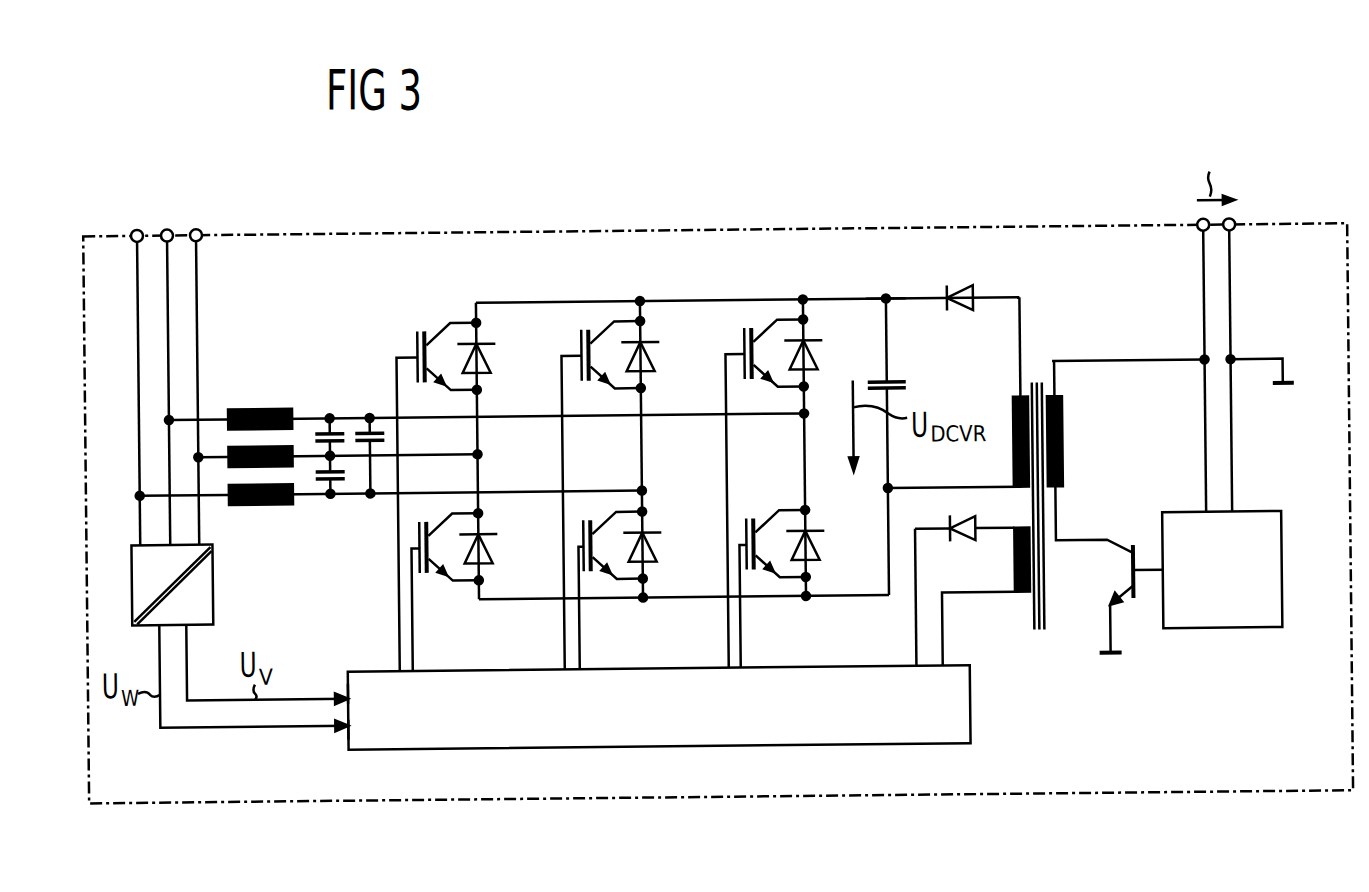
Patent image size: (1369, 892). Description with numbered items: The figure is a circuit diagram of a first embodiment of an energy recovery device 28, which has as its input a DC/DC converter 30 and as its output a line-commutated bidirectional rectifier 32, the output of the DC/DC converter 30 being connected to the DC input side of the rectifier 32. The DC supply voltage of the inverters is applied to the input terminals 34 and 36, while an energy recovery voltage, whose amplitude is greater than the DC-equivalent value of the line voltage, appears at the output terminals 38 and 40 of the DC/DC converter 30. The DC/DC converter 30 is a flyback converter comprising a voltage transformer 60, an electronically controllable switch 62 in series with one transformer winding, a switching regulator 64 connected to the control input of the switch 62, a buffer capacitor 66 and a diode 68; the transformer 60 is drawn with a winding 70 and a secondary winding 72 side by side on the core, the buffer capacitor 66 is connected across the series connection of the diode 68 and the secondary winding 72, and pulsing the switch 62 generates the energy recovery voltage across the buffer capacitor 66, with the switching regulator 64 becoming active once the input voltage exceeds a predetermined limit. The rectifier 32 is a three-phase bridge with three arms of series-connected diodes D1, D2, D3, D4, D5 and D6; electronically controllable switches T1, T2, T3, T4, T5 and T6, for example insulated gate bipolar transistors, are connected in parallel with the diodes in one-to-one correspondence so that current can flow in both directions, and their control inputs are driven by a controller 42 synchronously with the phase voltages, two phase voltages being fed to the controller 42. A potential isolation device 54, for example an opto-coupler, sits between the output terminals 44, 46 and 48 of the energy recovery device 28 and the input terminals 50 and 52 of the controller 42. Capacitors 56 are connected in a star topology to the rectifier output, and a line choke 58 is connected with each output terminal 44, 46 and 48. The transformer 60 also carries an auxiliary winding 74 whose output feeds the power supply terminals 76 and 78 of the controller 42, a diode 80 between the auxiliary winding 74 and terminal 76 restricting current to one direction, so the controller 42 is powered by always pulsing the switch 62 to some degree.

The energy recovery device 28 is at (729, 229).
The DC/DC converter 30 is at (1191, 376).
The line-commutated bidirectional rectifier 32 is at (687, 482).
The input terminal 34 is at (1204, 223).
The input terminal 36 is at (1236, 223).
The output terminal 38 is at (888, 298).
The output terminal 40 is at (893, 490).
The controller 42 is at (968, 702).
The output terminal 44 is at (140, 224).
The output terminal 46 is at (170, 224).
The output terminal 48 is at (199, 224).
The input terminal 50 is at (345, 688).
The input terminal 52 is at (346, 731).
The potential isolation device 54 is at (212, 583).
The capacitors 56 is at (369, 414).
The line choke 58 is at (259, 404).
The voltage transformer 60 is at (1009, 488).
The electronically controllable switch 62 is at (1128, 575).
The switching regulator 64 is at (1281, 575).
The buffer capacitor 66 is at (896, 382).
The diode 68 is at (952, 286).
The secondary winding 70 is at (1063, 444).
The secondary winding 72 is at (1014, 423).
The auxiliary winding 74 is at (1019, 601).
The power supply terminal 76 is at (913, 667).
The power supply terminal 78 is at (943, 667).
The diode 80 is at (967, 545).
The electronically controllable switch T1 is at (420, 344).
The electronically controllable switch T2 is at (410, 565).
The electronically controllable switch T3 is at (584, 344).
The electronically controllable switch T4 is at (582, 528).
The electronically controllable switch T5 is at (747, 344).
The electronically controllable switch T6 is at (747, 528).
The diode D1 is at (496, 356).
The diode D2 is at (496, 547).
The diode D3 is at (660, 357).
The diode D4 is at (660, 547).
The diode D5 is at (823, 357).
The diode D6 is at (823, 547).